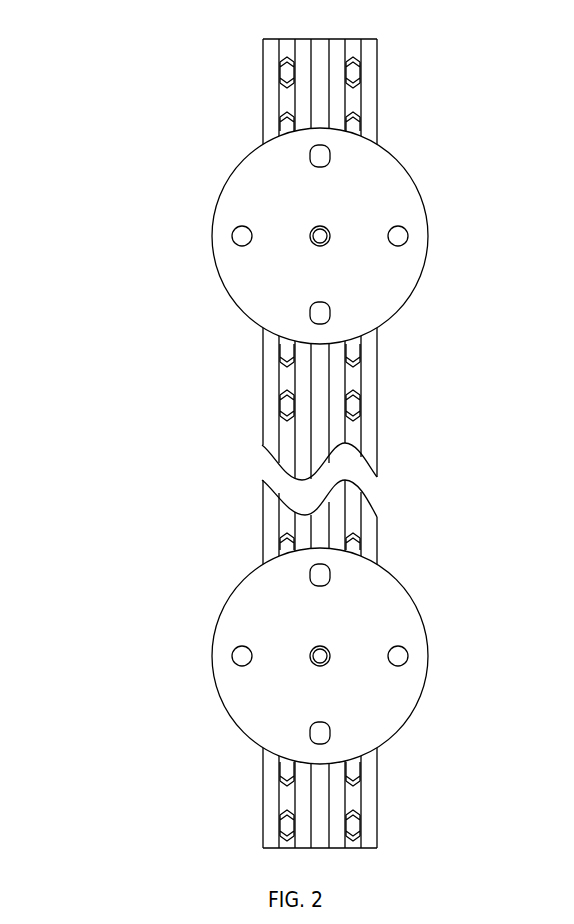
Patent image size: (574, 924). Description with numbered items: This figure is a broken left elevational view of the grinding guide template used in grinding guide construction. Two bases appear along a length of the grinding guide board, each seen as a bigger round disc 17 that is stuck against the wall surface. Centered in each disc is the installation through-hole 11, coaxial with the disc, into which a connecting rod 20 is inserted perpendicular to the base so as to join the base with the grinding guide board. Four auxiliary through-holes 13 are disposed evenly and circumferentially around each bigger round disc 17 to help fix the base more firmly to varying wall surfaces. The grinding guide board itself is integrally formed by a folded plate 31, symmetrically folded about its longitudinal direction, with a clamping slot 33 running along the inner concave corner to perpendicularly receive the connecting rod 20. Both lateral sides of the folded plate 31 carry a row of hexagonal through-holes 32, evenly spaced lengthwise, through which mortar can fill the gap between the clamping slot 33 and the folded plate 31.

The installation through-hole 11 is at (333, 240).
The auxiliary through-hole 13 is at (242, 238).
The bigger round disc 17 is at (230, 190).
The connecting rod 20 is at (328, 230).
The folded plate 31 is at (263, 419).
The through-holes 32 is at (353, 408).
The clamping slot 33 is at (318, 533).